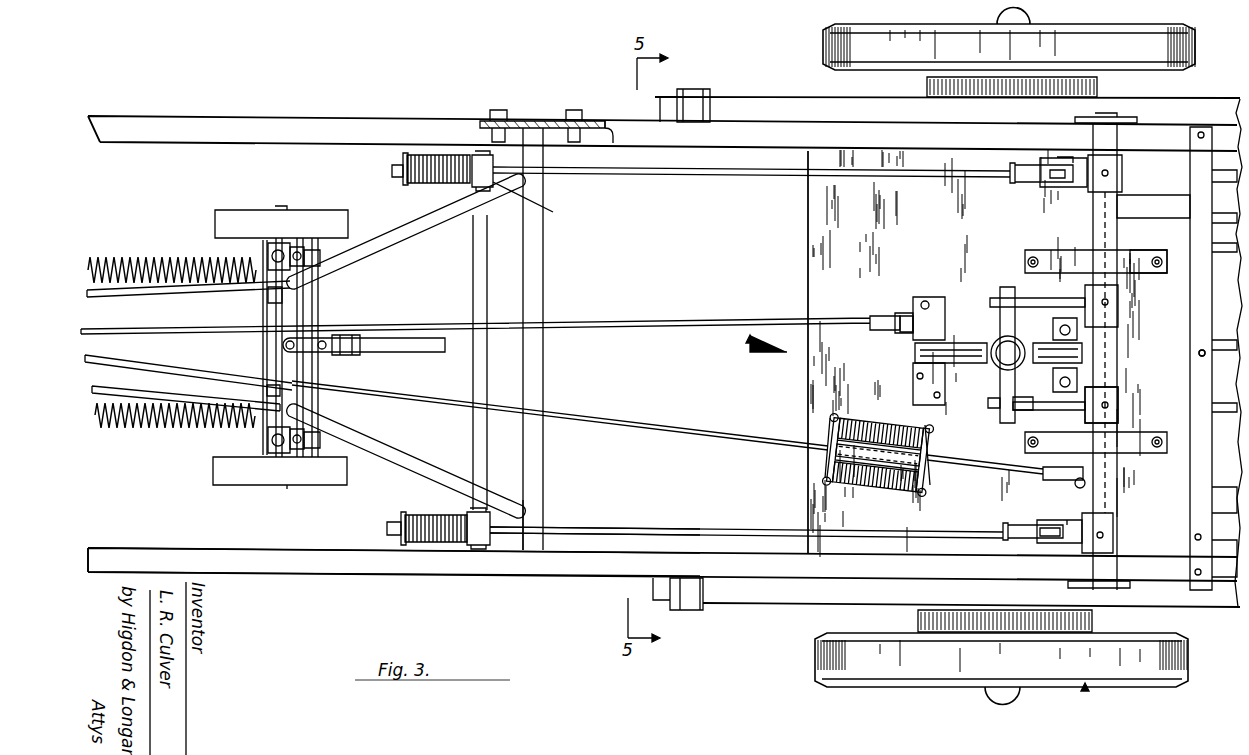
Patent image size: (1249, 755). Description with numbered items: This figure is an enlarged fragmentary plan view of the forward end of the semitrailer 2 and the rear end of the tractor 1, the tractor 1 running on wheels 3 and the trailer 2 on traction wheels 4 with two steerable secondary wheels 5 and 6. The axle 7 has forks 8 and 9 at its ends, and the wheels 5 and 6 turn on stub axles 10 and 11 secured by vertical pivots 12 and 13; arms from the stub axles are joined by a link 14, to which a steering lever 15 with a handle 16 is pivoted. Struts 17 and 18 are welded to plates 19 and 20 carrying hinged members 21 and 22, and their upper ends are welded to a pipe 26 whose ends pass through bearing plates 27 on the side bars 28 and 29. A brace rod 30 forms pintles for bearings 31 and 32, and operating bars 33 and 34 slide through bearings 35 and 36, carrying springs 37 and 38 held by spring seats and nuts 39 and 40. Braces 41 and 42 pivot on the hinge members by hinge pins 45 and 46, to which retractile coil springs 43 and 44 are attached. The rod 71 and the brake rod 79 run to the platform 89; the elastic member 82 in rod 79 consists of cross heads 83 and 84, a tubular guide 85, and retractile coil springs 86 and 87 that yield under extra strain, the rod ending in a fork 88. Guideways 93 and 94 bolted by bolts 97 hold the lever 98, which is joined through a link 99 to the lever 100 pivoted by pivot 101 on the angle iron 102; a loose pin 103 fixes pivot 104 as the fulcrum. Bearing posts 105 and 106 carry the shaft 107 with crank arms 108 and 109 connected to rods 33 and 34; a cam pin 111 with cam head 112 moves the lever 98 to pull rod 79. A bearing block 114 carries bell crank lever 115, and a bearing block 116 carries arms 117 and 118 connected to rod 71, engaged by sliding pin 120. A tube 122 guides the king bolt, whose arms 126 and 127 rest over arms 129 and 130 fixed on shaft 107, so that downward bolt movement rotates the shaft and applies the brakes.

The tractor 1 is at (1085, 688).
The semitrailer 2 is at (333, 578).
The wheels 3 is at (1195, 47).
The traction wheels 4 is at (763, 353).
The secondary wheel 5 is at (303, 212).
The secondary wheel 6 is at (312, 490).
The axle 7 is at (263, 343).
The fork 8 is at (322, 258).
The fork 9 is at (290, 436).
The stub axle 10 is at (278, 446).
The stub axle 11 is at (270, 253).
The vertical pivot 12 is at (303, 452).
The vertical pivot 13 is at (294, 245).
The link 14 is at (320, 372).
The steering lever 15 is at (322, 340).
The handle 16 is at (388, 346).
The strut 17 is at (400, 248).
The strut 18 is at (410, 455).
The plate 19 is at (300, 290).
The plate 20 is at (300, 402).
The hinged member 21 is at (268, 295).
The hinged member 22 is at (267, 396).
The pipe 26 is at (543, 284).
The bearing plates 27 is at (555, 121).
The side bar 28 is at (633, 133).
The side bar 29 is at (628, 535).
The brace rod 30 is at (487, 385).
The bearing 31 is at (553, 212).
The bearing 32 is at (523, 505).
The operating bar 33 is at (598, 178).
The operating bar 34 is at (575, 526).
The bearing 35 is at (488, 182).
The bearing 36 is at (478, 548).
The spring 37 is at (430, 155).
The spring 38 is at (470, 512).
The spring seat and nut 39 is at (392, 168).
The spring seat and nut 40 is at (387, 530).
The brace 41 is at (105, 292).
The brace 42 is at (112, 362).
The retractile coil spring 43 is at (148, 262).
The retractile coil spring 44 is at (140, 425).
The hinge pin 45 is at (265, 300).
The hinge pin 46 is at (262, 386).
The rod 71 is at (650, 320).
The rod 79 is at (668, 428).
The elastic member 82 is at (930, 473).
The cross head 83 is at (932, 445).
The cross head 84 is at (824, 460).
The tubular guide 85 is at (862, 470).
The retractile coil spring 86 is at (862, 420).
The retractile coil spring 87 is at (883, 482).
The fork 88 is at (1060, 474).
The platform 89 is at (808, 393).
The guideway 93 is at (1150, 298).
The guideway 94 is at (1135, 432).
The bolts 97 is at (1033, 257).
The lever 98 is at (1085, 415).
The link 99 is at (1148, 205).
The lever 100 is at (1118, 310).
The pivot 101 is at (1198, 352).
The angle iron 102 is at (1220, 112).
The loose pin 103 is at (1198, 535).
The pivot 104 is at (1085, 195).
The bearing post 105 is at (1130, 122).
The bearing post 106 is at (1120, 590).
The shaft 107 is at (1140, 250).
The crank arm 108 is at (1122, 165).
The crank arm 109 is at (1095, 540).
The cam pin 111 is at (1082, 355).
The cam head 112 is at (1120, 382).
The bearing block 114 is at (1053, 325).
The bell crank lever 115 is at (1053, 385).
The bearing block 116 is at (928, 405).
The arm 117 is at (970, 345).
The arm 118 is at (915, 297).
The sliding pin 120 is at (1005, 287).
The tube 122 is at (1003, 345).
The arm 126 is at (945, 366).
The arm 127 is at (1000, 395).
The arm 129 is at (1045, 290).
The arm 130 is at (1012, 408).